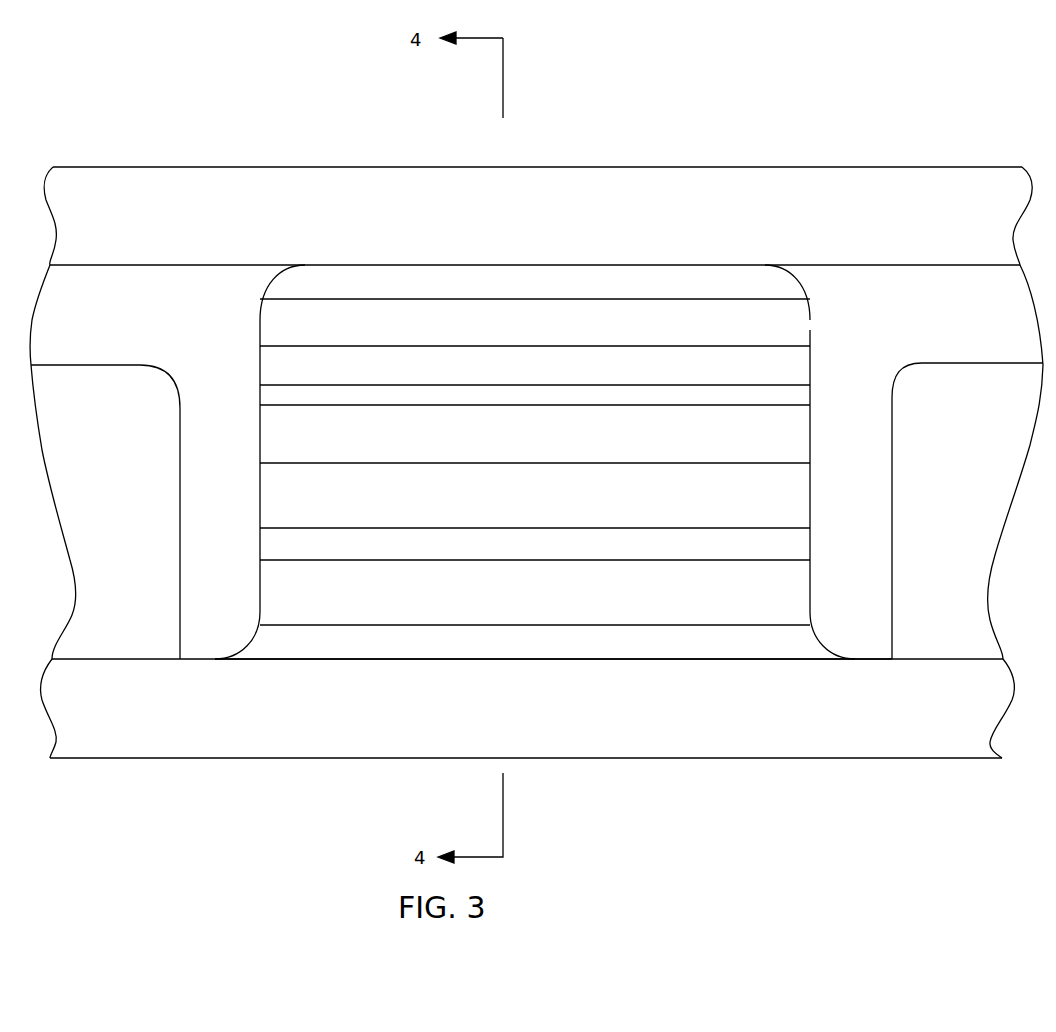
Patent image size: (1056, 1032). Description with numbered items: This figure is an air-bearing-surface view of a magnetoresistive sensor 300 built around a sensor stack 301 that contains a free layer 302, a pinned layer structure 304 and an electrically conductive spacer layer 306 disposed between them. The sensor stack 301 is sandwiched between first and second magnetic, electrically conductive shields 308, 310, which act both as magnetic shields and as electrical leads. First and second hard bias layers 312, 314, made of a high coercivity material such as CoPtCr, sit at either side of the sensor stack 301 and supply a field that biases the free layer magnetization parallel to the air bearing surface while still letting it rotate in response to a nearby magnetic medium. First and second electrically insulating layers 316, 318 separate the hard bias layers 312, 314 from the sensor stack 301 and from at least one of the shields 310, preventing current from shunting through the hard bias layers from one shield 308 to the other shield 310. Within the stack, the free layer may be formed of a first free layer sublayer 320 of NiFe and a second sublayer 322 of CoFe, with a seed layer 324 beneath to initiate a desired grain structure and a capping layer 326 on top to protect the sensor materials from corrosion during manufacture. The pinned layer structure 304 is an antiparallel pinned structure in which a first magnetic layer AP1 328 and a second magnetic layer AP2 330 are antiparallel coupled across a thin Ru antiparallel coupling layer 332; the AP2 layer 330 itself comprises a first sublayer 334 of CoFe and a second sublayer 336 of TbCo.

The magnetoresistive sensor 300 is at (732, 139).
The sensor stack 301 is at (712, 267).
The free layer 302 is at (816, 528).
The pinned layer structure 304 is at (815, 463).
The electrically conductive spacer layer 306 is at (714, 494).
The first magnetic, electrically conductive shield 308 is at (705, 702).
The second magnetic, electrically conductive shield 310 is at (580, 220).
The first hard bias layer 312 is at (991, 426).
The second hard bias layer 314 is at (110, 448).
The first electrically insulating layer 316 is at (923, 319).
The second electrically insulating layer 318 is at (243, 499).
The first free layer sublayer 320 is at (714, 593).
The second free layer sublayer 322 is at (714, 547).
The seed layer 324 is at (714, 641).
The capping layer 326 is at (715, 284).
The first magnetic layer (AP1) 328 is at (714, 436).
The second magnetic layer (AP2) 330 is at (256, 384).
The antiparallel coupling layer 332 is at (715, 395).
The first sublayer of the AP2 layer 334 is at (718, 365).
The second sublayer of the AP2 layer 336 is at (716, 322).